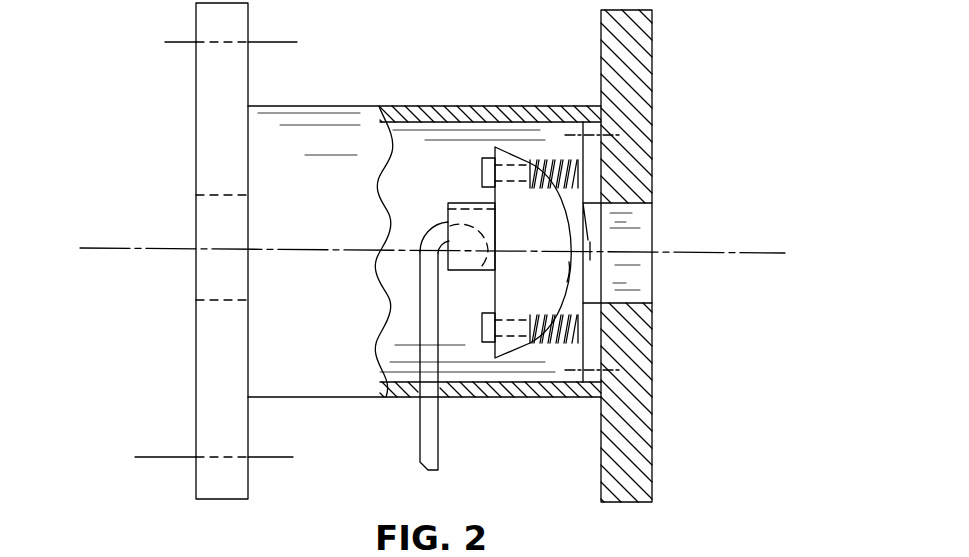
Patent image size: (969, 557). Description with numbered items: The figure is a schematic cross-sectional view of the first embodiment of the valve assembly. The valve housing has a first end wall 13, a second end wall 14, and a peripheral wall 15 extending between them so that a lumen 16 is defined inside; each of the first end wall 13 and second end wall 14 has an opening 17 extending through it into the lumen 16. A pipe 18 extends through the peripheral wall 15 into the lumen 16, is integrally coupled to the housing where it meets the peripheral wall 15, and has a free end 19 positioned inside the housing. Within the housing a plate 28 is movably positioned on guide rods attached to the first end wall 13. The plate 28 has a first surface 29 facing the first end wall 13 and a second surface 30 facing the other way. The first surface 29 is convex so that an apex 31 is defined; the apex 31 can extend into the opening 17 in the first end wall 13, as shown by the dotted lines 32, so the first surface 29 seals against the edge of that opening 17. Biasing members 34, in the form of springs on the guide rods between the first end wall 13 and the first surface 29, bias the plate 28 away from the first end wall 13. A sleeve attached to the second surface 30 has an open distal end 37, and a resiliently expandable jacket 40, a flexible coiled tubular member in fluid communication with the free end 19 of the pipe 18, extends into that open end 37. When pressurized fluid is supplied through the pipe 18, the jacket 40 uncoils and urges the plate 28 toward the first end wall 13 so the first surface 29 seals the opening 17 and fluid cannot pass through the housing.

The first end wall 13 is at (645, 32).
The second end wall 14 is at (196, 104).
The peripheral wall 15 is at (507, 106).
The lumen 16 is at (440, 135).
The opening 17 is at (643, 218).
The pipe 18 is at (420, 430).
The free end 19 is at (418, 282).
The plate 28 is at (532, 285).
The first surface 29 is at (567, 270).
The second surface 30 is at (493, 294).
The apex 31 is at (588, 272).
The dotted lines 32 is at (590, 242).
The biasing members 34 is at (560, 300).
The open distal end 37 is at (447, 208).
The resiliently expandable jacket 40 is at (437, 230).